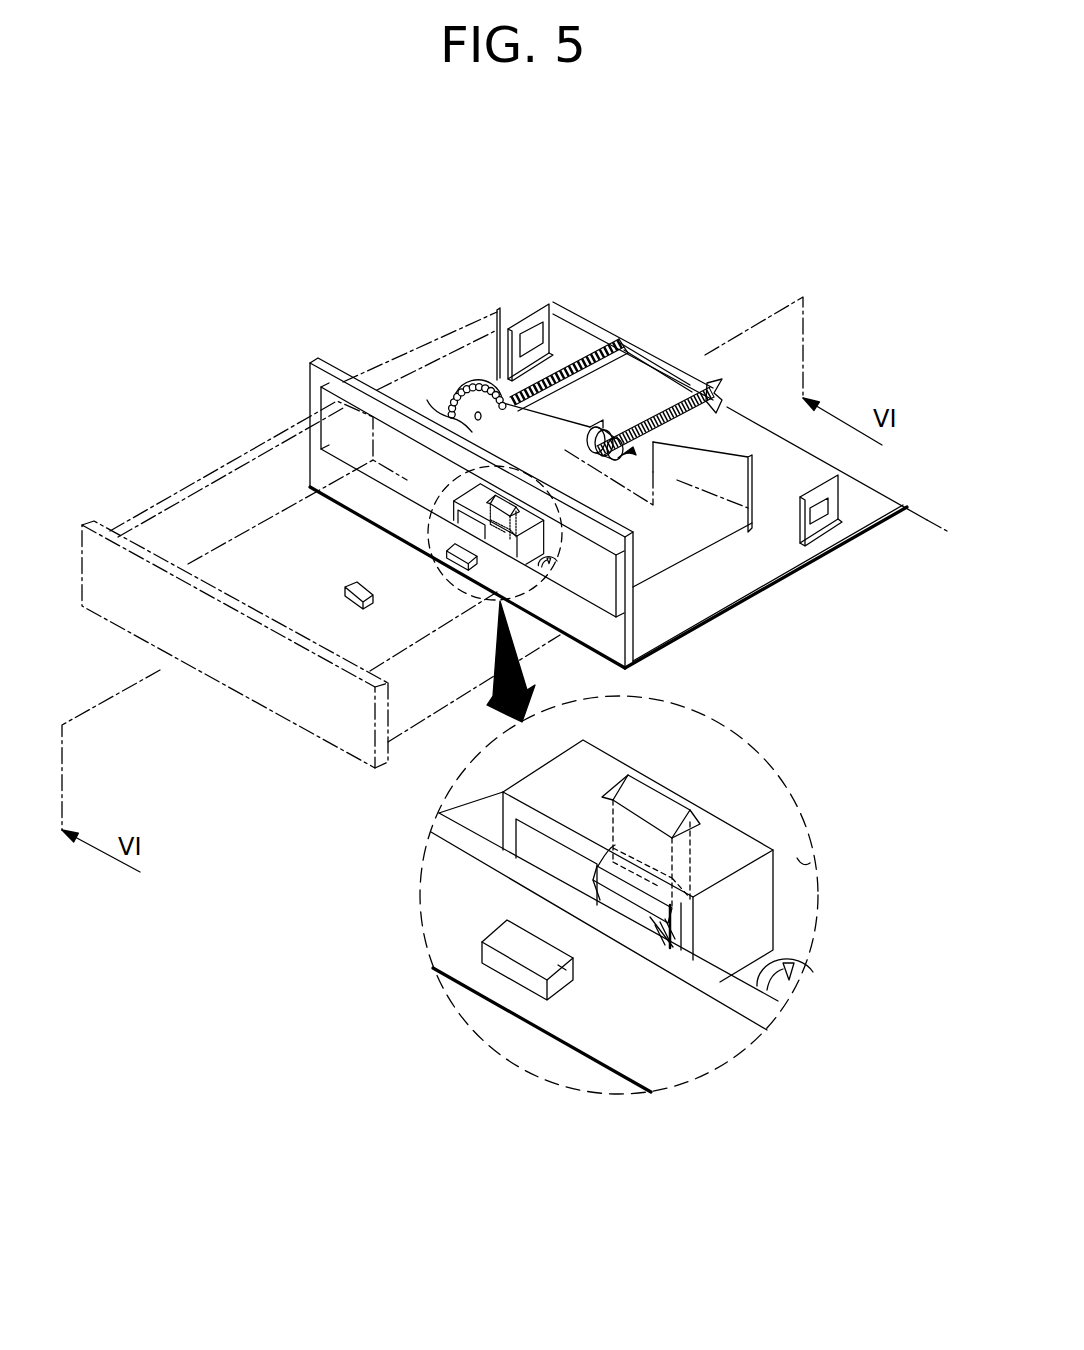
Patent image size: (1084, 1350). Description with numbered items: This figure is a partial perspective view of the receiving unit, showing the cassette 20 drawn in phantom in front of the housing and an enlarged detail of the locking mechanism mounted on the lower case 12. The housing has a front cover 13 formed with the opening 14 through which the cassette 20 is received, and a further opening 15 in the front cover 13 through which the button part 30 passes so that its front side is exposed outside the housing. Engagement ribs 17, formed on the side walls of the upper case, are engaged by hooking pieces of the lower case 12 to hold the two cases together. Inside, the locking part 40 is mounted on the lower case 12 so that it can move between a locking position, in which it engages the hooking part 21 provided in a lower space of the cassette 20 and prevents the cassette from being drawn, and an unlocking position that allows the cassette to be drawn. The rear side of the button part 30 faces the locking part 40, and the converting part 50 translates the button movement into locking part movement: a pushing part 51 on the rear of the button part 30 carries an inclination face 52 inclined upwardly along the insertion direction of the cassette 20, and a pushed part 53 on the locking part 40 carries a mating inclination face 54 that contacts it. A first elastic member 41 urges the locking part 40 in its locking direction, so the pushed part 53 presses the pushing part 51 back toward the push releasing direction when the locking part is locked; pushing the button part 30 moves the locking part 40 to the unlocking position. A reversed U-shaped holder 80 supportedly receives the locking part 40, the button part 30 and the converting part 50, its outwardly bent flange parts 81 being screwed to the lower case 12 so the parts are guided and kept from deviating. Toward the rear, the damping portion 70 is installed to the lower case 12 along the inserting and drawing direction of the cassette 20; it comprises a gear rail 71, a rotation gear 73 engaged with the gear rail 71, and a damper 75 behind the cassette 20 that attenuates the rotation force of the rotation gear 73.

The lower case 12 is at (750, 565).
The front cover 13 is at (600, 640).
The opening 14 is at (811, 862).
The opening 15 is at (562, 968).
The engagement rib 17 is at (545, 379).
The cassette 20 is at (205, 478).
The hooking part 21 is at (347, 593).
The button part 30 is at (518, 965).
The locking part 40 is at (695, 826).
The first elastic member 41 is at (672, 933).
The converting part 50 is at (638, 1026).
The pushing part 51 is at (590, 900).
The inclination face 52 is at (685, 930).
The pushed part 53 is at (660, 950).
The inclination face 54 is at (613, 905).
The damping portion 70 is at (484, 330).
The gear rail 71 is at (547, 378).
The rotation gear 73 is at (488, 380).
The damper 75 is at (450, 387).
The holder 80 is at (527, 793).
The flange part 81 is at (797, 957).